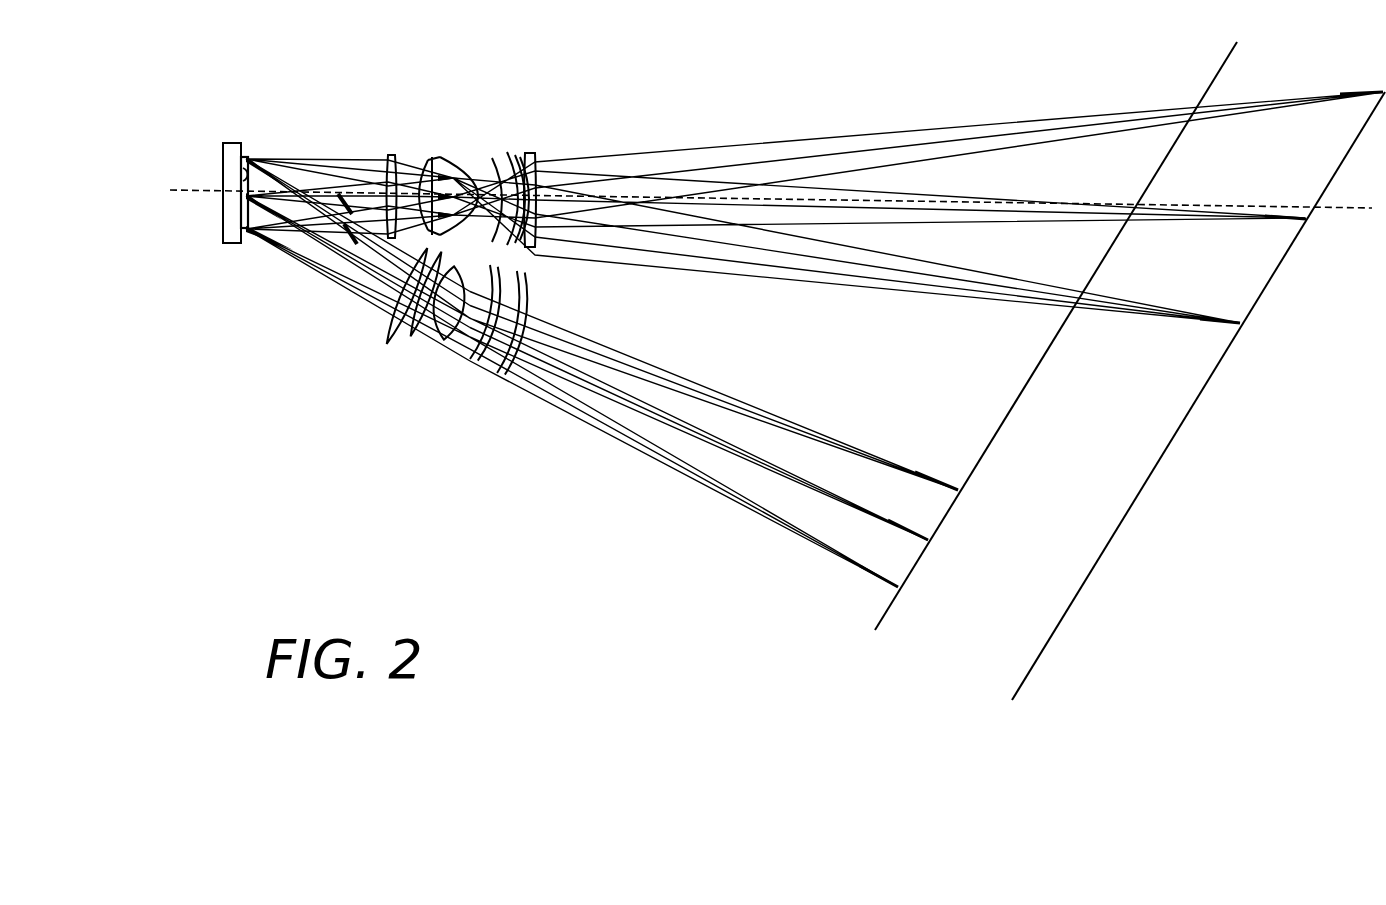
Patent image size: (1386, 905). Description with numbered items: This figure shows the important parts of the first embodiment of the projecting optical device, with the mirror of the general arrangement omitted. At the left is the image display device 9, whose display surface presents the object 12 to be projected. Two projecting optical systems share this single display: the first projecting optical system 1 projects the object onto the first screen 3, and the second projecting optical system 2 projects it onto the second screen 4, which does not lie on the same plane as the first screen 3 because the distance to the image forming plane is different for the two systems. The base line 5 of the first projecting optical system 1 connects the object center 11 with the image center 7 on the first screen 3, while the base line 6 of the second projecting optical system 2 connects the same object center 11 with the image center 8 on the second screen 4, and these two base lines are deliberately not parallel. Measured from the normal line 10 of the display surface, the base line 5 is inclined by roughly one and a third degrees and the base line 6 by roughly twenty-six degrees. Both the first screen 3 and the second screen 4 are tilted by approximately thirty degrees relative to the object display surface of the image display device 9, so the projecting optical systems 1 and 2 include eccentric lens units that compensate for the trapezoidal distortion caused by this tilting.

The first projecting optical system 1 is at (533, 130).
The second projecting optical system 2 is at (493, 392).
The first screen 3 is at (1187, 416).
The second screen 4 is at (1023, 386).
The base line of first projecting optical system 5 is at (738, 205).
The base line of second projecting optical system 6 is at (312, 215).
The image center 7 is at (1306, 219).
The image center 8 is at (929, 541).
The image display device 9 is at (237, 143).
The normal line 10 is at (836, 205).
The object center 11 is at (241, 196).
The object 12 is at (240, 170).